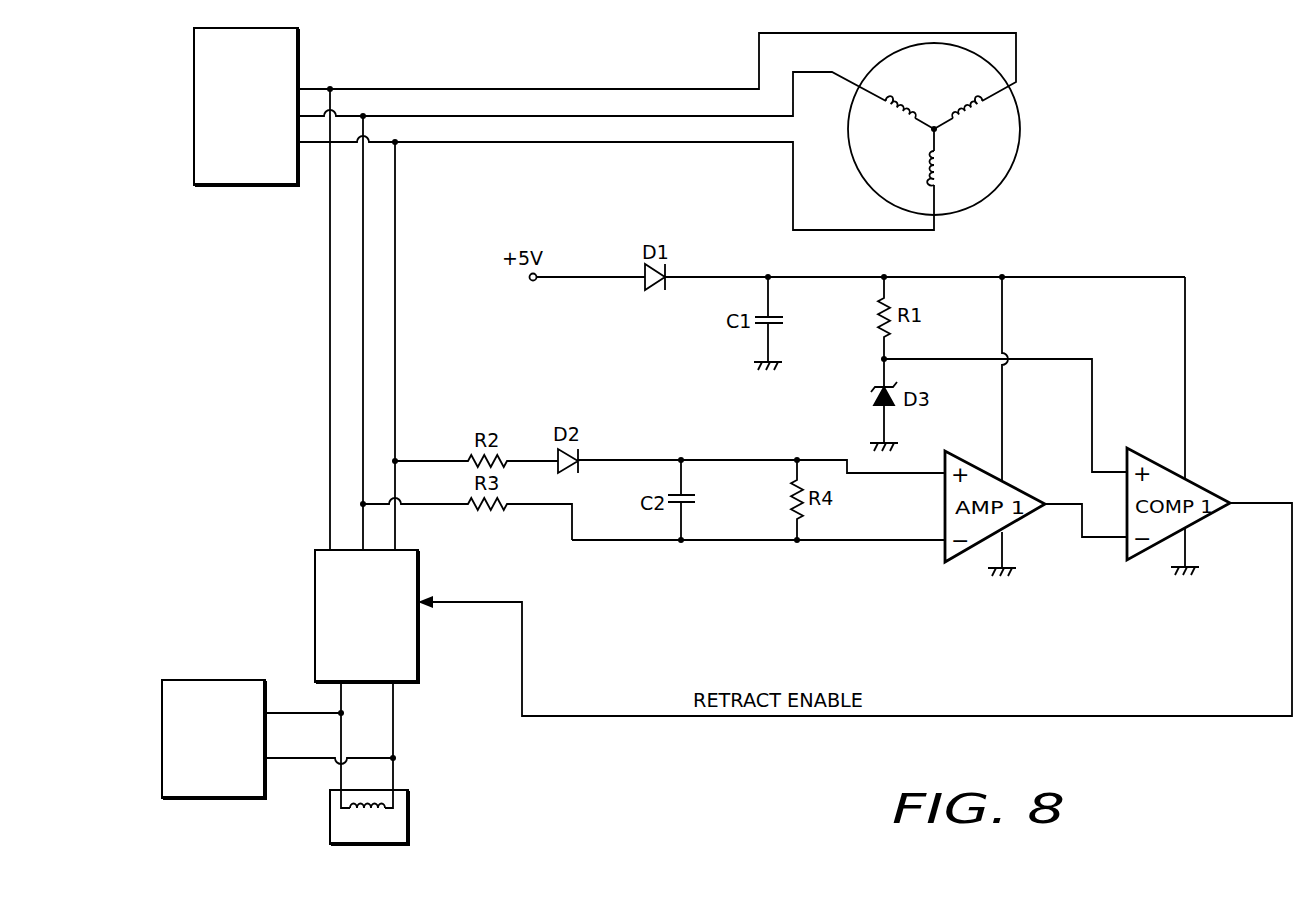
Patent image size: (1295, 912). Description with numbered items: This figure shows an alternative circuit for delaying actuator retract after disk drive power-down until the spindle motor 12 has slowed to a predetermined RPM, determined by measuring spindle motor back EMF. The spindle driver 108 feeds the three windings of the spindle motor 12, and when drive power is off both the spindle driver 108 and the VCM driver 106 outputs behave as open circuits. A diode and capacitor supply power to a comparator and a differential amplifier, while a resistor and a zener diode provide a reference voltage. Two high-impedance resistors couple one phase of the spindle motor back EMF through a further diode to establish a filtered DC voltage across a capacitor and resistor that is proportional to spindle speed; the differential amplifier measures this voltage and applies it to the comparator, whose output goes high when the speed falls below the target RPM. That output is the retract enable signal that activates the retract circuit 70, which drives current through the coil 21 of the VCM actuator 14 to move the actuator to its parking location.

The spindle driver 108 is at (243, 186).
The spindle motor 12 is at (1020, 129).
The retract circuit 70 is at (315, 562).
The VCM driver 106 is at (221, 680).
The VCM actuator 14 is at (410, 822).
The coil 21 is at (350, 808).